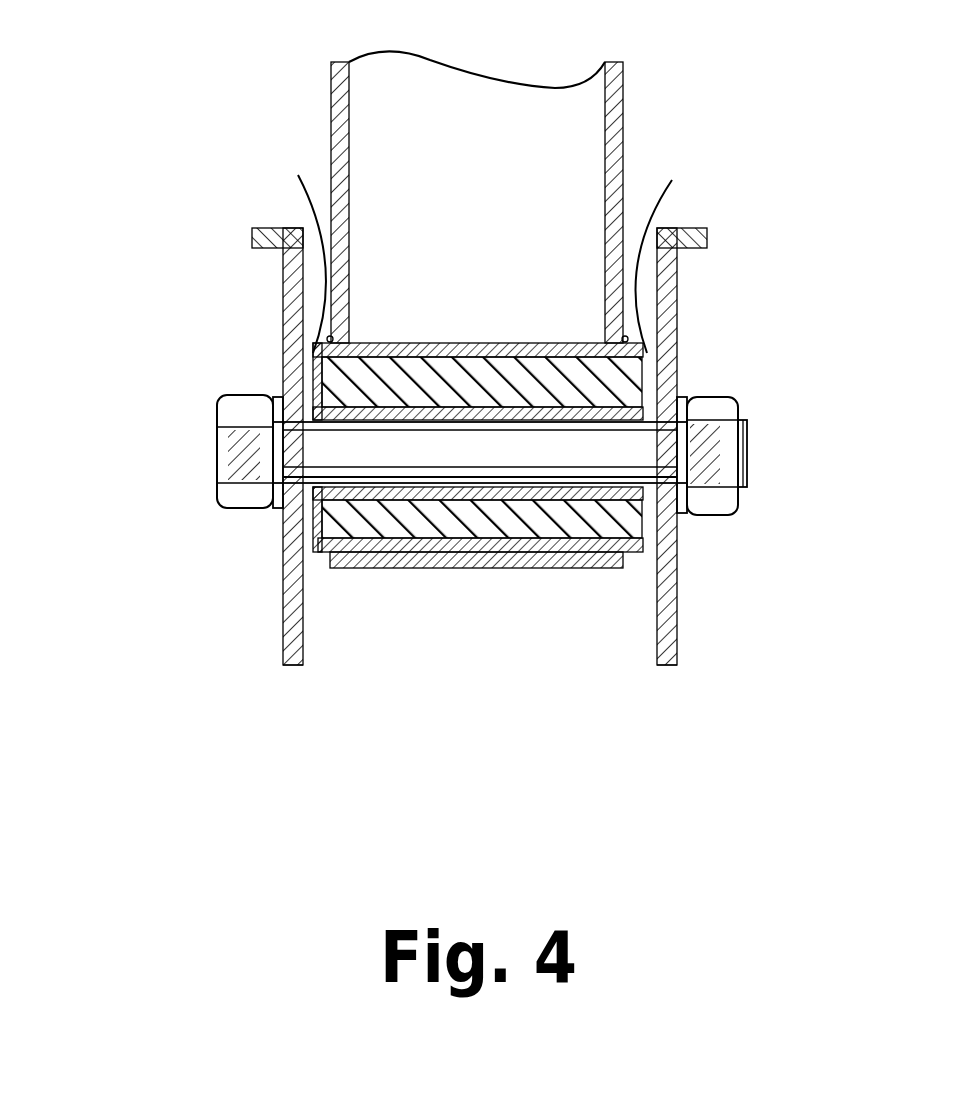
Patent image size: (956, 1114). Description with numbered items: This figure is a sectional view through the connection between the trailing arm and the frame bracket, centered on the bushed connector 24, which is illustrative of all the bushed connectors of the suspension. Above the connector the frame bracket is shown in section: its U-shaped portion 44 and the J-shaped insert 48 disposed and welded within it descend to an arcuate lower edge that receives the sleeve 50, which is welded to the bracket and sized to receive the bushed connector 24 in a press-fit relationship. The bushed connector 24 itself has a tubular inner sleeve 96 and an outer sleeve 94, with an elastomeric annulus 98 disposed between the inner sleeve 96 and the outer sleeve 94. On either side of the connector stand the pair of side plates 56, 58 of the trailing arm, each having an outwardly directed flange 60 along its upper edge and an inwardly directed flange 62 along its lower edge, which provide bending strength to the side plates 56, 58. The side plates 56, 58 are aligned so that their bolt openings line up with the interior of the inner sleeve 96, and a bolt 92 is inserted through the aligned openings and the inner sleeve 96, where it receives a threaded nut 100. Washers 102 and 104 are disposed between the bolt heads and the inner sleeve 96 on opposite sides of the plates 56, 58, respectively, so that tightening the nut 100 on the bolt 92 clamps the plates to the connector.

The bushed connector 24 is at (432, 343).
The U-shaped portion 44 is at (330, 83).
The J-shaped insert 48 is at (623, 87).
The sleeve 50 is at (460, 568).
The side plate 56 is at (270, 309).
The side plate 58 is at (690, 322).
The outwardly directed flange 60 is at (253, 230).
The inwardly directed flange 62 is at (299, 665).
The bolt 92 is at (217, 430).
The outer sleeve 94 is at (545, 350).
The tubular inner sleeve 96 is at (422, 500).
The elastomeric annulus 98 is at (535, 545).
The threaded nut 100 is at (738, 407).
The washer 102 is at (277, 398).
The washer 104 is at (480, 247).